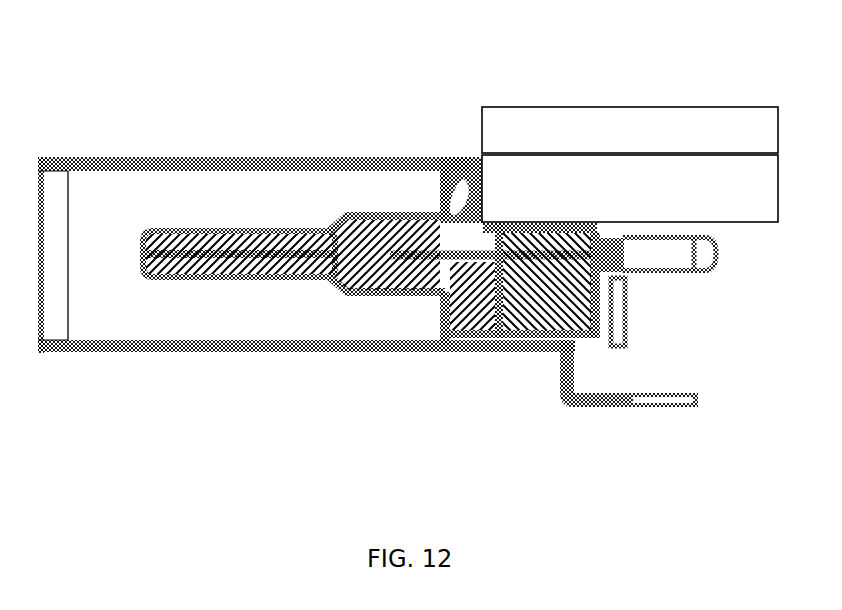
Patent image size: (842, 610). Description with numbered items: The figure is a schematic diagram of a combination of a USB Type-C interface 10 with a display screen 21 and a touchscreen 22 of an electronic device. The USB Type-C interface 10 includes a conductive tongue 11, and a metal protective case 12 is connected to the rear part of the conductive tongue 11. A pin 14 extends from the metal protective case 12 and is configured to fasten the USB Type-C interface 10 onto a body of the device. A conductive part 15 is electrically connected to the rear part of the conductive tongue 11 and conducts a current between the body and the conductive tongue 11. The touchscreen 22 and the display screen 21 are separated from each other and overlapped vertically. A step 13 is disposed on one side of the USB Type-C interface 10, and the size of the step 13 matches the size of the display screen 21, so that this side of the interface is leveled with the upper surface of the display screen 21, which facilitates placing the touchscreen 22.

The USB Type-C interface 10 is at (412, 261).
The conductive tongue 11 is at (195, 246).
The metal protective case 12 is at (288, 160).
The step 13 is at (630, 115).
The pin 14 is at (590, 402).
The conductive part 15 is at (667, 260).
The display screen 21 is at (590, 203).
The touchscreen 22 is at (590, 143).